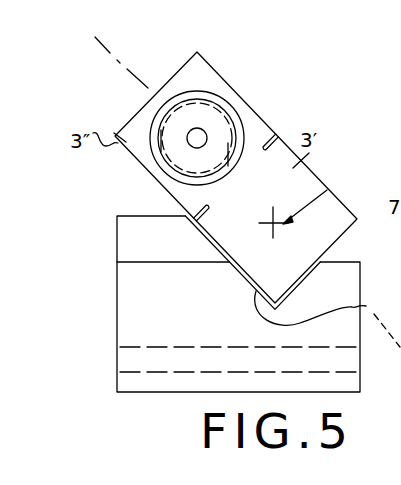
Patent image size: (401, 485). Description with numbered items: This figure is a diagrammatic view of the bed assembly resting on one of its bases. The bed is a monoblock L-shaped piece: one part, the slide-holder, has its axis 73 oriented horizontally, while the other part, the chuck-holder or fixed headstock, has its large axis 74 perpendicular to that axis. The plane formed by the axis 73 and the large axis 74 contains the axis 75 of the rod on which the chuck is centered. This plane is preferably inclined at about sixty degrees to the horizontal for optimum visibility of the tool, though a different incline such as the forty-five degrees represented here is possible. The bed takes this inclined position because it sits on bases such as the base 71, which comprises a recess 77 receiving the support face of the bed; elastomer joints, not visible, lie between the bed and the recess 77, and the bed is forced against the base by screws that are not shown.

The base 71 is at (360, 369).
The axis 73 is at (327, 190).
The large axis 74 is at (114, 53).
The axis of the rod 75 is at (197, 138).
The recess 77 is at (327, 316).